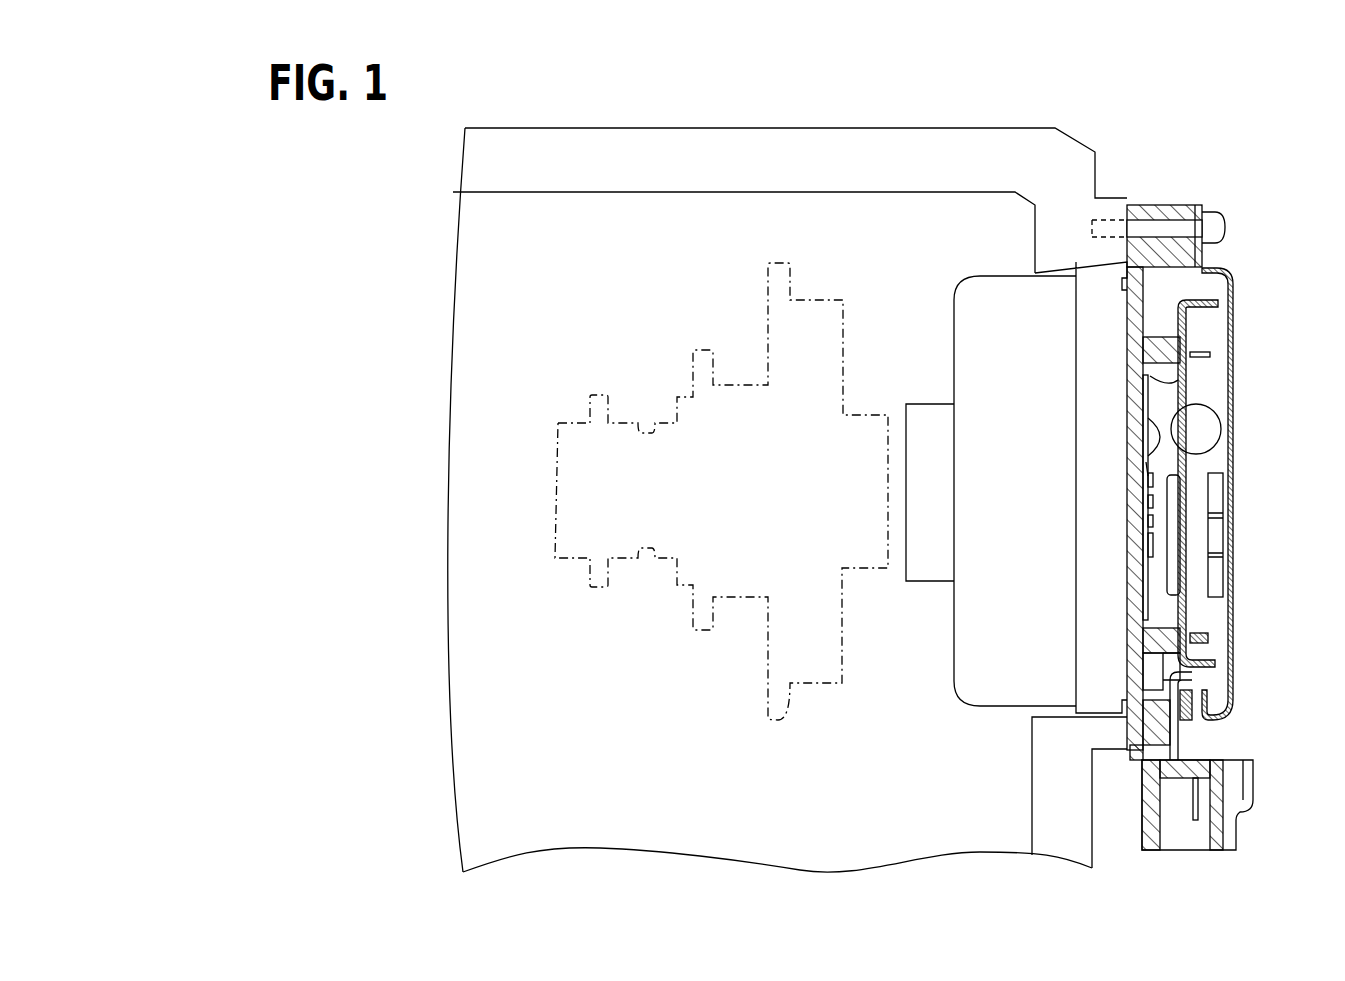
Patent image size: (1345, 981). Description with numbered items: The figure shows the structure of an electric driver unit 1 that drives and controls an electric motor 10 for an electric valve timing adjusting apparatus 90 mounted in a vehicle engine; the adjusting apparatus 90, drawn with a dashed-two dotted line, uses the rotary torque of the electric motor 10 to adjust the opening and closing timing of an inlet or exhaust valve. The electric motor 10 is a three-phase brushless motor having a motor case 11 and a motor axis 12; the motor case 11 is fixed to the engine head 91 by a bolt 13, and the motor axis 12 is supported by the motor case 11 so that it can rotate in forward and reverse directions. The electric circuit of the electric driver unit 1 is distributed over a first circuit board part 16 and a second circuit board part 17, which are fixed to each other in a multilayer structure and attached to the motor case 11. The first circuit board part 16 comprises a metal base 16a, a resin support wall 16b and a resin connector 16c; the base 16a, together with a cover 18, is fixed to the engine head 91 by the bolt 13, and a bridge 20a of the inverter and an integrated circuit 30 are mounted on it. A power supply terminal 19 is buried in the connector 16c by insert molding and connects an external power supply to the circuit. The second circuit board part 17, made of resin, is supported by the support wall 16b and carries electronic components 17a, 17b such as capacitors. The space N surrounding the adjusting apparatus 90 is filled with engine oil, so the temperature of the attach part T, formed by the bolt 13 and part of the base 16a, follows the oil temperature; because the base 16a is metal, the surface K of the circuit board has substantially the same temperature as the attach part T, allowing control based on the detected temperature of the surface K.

The electric driver unit 1 is at (1160, 519).
The electric motor 10 is at (950, 274).
The motor case 11 is at (1076, 309).
The motor axis 12 is at (903, 510).
The bolt 13 is at (1225, 216).
The first circuit board part 16 is at (1125, 695).
The base 16a is at (1130, 607).
The support wall 16b is at (1143, 655).
The connector 16c is at (1218, 690).
The second circuit board part 17 is at (1200, 621).
The electronic component 17a is at (1222, 420).
The electronic component 17b is at (1220, 478).
The cover 18 is at (1235, 340).
The power supply terminal 19 is at (1195, 822).
The bridge 20a is at (1125, 435).
The integrated circuit 30 is at (1125, 576).
The electric valve timing adjusting apparatus 90 is at (828, 300).
The engine head 91 is at (860, 128).
The surface of the circuit board K is at (1150, 469).
The space N is at (962, 206).
The attach part T is at (1161, 203).